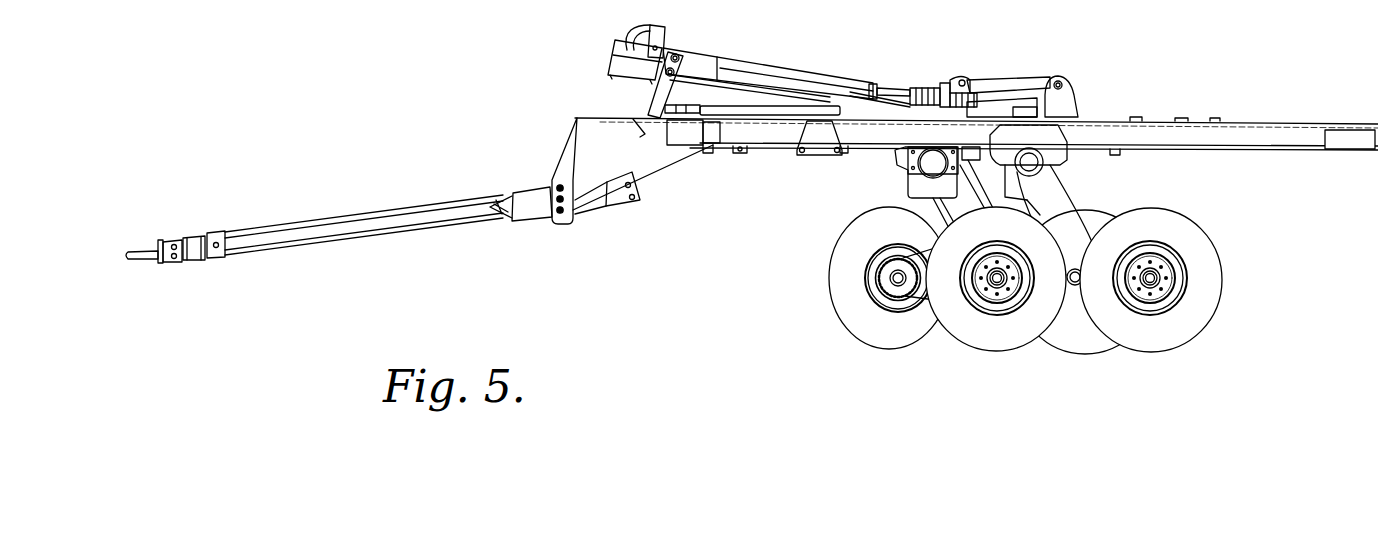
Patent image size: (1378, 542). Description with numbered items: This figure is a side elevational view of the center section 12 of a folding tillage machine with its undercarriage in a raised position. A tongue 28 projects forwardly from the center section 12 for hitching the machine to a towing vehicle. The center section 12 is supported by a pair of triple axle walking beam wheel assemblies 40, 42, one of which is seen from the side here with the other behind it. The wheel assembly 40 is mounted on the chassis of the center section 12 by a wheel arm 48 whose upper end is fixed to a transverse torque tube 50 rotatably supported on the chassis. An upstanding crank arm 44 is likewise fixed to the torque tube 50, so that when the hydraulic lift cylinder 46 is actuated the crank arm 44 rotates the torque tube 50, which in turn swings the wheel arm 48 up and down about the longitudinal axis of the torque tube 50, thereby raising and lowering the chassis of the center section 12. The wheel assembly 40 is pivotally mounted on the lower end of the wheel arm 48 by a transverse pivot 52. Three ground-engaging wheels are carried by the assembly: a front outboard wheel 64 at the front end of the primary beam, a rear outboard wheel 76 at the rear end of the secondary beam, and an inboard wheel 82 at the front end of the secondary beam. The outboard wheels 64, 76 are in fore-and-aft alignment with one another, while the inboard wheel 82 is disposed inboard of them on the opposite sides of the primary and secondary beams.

The center section 12 is at (1270, 109).
The tongue 28 is at (383, 227).
The wheel assembly 40 is at (1022, 269).
The wheel assembly 42 is at (845, 340).
The crank arm 44 is at (1070, 102).
The lift cylinder 46 is at (832, 112).
The wheel arm 48 is at (1070, 200).
The torque tube 50 is at (1032, 165).
The transverse pivot 52 is at (1082, 272).
The front outboard ground-engaging wheel 64 is at (988, 342).
The outboard ground-engaging wheel 76 is at (1210, 305).
The inboard ground-engaging wheel 82 is at (1093, 343).